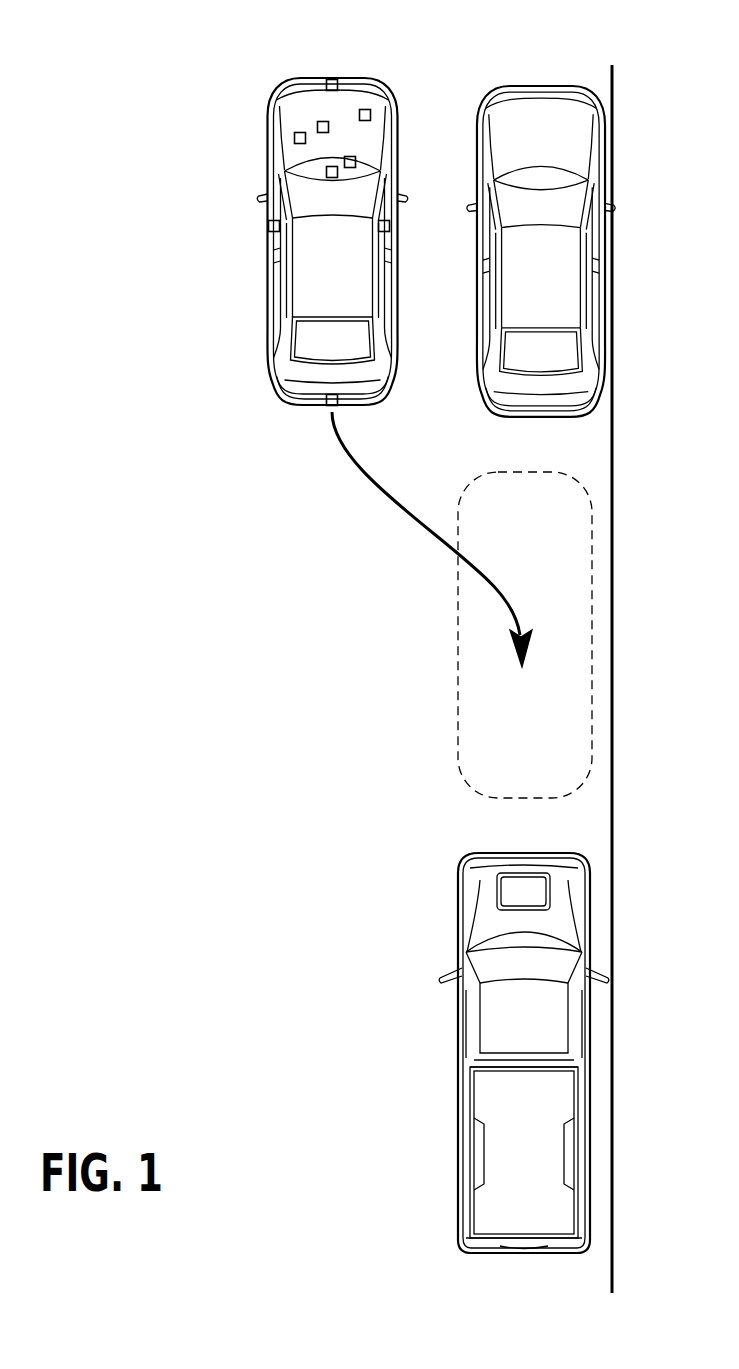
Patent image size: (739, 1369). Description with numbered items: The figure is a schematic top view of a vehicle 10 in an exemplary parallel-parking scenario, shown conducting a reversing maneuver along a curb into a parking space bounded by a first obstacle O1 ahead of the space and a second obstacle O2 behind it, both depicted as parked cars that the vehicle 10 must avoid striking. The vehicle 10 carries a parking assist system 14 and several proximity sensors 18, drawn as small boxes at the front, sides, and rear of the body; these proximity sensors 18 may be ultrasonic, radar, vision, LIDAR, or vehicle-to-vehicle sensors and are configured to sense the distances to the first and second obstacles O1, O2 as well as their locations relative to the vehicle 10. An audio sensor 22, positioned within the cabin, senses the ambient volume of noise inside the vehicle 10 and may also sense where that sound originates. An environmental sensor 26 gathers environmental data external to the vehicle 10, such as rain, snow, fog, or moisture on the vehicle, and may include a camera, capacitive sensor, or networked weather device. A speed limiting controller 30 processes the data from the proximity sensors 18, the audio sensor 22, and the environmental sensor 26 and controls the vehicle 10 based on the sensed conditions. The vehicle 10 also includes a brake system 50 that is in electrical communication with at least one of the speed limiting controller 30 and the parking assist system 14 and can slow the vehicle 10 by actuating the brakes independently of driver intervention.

The vehicle 10 is at (265, 122).
The parking assist system 14 is at (294, 138).
The proximity sensors 18 is at (328, 80).
The audio sensor 22 is at (318, 121).
The environmental sensor 26 is at (326, 172).
The speed limiting controller 30 is at (366, 109).
The brake system 50 is at (351, 156).
The first obstacle O1 is at (563, 264).
The second obstacle O2 is at (560, 1020).